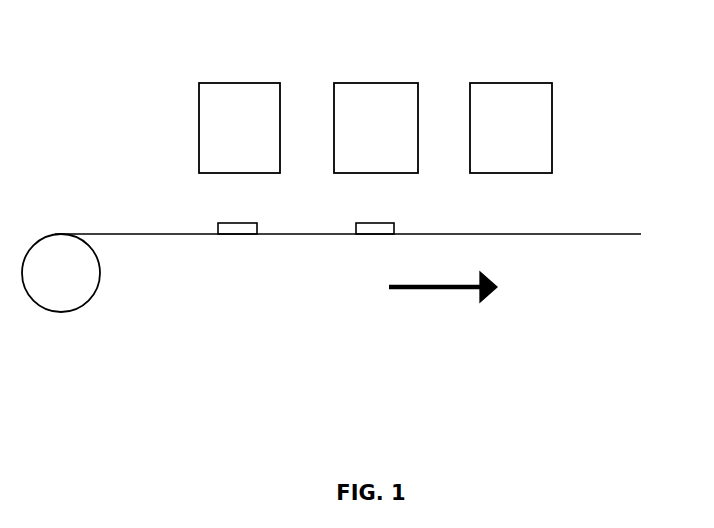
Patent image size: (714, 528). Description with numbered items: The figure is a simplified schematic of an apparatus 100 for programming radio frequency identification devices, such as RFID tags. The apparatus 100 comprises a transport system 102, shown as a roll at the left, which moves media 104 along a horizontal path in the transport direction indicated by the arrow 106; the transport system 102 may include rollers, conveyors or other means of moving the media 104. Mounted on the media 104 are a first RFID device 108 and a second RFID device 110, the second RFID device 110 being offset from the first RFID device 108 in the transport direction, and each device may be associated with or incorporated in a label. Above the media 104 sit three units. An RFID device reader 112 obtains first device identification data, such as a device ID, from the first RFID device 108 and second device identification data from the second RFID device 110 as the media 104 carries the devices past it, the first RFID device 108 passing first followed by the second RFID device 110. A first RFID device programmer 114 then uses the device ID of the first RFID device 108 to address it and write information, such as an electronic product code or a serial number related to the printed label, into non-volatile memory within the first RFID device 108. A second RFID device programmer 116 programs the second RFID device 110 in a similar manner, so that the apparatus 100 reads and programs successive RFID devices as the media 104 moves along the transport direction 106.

The apparatus 100 is at (357, 436).
The transport system 102 is at (88, 300).
The media 104 is at (602, 237).
The transport direction 106 is at (418, 290).
The first RFID device 108 is at (394, 232).
The second RFID device 110 is at (243, 233).
The RFID device reader 112 is at (199, 143).
The first RFID device programmer 114 is at (552, 120).
The second RFID device programmer 116 is at (372, 83).